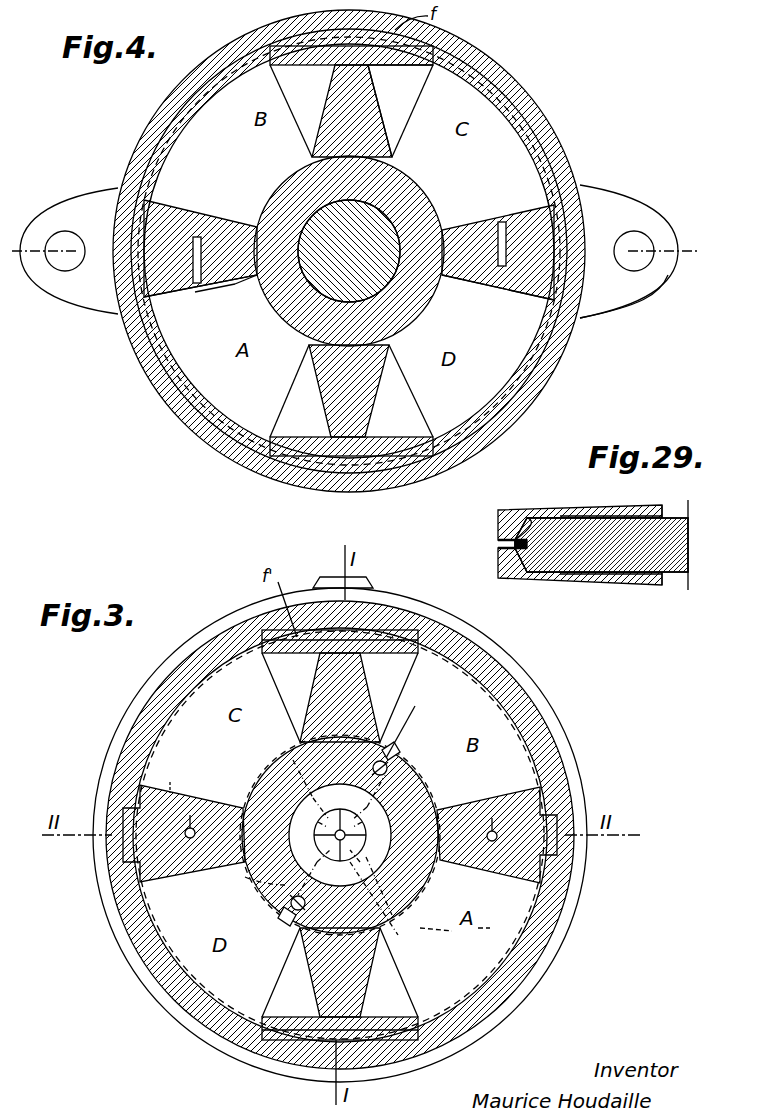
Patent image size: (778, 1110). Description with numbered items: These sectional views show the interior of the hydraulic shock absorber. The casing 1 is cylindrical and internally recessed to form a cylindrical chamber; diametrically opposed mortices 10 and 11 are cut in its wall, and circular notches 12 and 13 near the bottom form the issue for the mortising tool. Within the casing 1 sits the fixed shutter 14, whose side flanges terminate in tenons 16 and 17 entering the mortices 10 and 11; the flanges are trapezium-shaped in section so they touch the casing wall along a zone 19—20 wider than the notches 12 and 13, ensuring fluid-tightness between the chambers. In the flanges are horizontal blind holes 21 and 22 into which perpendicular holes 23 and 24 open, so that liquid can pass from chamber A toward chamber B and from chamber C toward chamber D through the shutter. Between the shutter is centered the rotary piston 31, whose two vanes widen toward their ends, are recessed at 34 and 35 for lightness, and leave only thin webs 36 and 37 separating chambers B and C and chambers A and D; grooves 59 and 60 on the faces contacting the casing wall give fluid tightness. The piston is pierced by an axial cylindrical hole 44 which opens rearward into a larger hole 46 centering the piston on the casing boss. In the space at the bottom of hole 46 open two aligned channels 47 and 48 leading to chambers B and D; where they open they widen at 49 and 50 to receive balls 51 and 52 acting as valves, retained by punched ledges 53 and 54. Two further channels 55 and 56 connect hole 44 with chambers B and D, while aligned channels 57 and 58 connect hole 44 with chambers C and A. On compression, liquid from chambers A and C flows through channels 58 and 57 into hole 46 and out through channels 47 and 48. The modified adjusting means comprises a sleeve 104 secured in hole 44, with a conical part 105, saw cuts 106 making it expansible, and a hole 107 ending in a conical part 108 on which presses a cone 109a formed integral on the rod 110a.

In FIG. 3, the casing 1 is at (406, 721).
In FIG. 4, the mortice 10 is at (135, 257).
In FIG. 3, the mortice 10 is at (340, 835).
In FIG. 4, the mortice 11 is at (580, 247).
In FIG. 4, the circular notch 12 is at (122, 200).
In FIG. 4, the circular notch 13 is at (580, 303).
In FIG. 4, the fixed shutter 14 is at (241, 290).
In FIG. 4, the tenon 16 is at (120, 302).
In FIG. 4, the tenon 17 is at (580, 322).
In FIG. 4, the contact zone boundary 19 is at (168, 197).
In FIG. 3, the contact zone boundary 19 is at (184, 833).
In FIG. 4, the contact zone boundary 20 is at (148, 299).
In FIG. 4, the horizontal blind hole 21 is at (209, 290).
In FIG. 3, the horizontal blind hole 21 is at (489, 882).
In FIG. 4, the horizontal blind hole 22 is at (501, 222).
In FIG. 3, the horizontal blind hole 22 is at (167, 772).
In FIG. 3, the perpendicular hole 23 is at (193, 807).
In FIG. 3, the perpendicular hole 24 is at (506, 800).
In FIG. 4, the rotary piston 31 is at (268, 196).
In FIG. 3, the rotary piston 31 is at (425, 880).
In FIG. 4, the recess 34 is at (318, 98).
In FIG. 4, the recess 35 is at (300, 382).
In FIG. 4, the thin web 36 is at (400, 111).
In FIG. 4, the thin web 37 is at (362, 436).
In FIG. 3, the axial cylindrical hole 44 is at (318, 843).
In FIG. 3, the hole 46 is at (369, 836).
In FIG. 3, the channel 47 is at (392, 781).
In FIG. 3, the channel 48 is at (245, 877).
In FIG. 3, the widened portion 49 is at (392, 764).
In FIG. 3, the widened portion 50 is at (287, 901).
In FIG. 3, the ball 51 is at (389, 768).
In FIG. 3, the ball 52 is at (296, 923).
In FIG. 3, the ledge 53 is at (388, 758).
In FIG. 3, the ledge 54 is at (292, 917).
In FIG. 3, the channel 55 is at (350, 816).
In FIG. 3, the channel 56 is at (338, 870).
In FIG. 3, the channel 57 is at (302, 770).
In FIG. 3, the channel 58 is at (432, 925).
In FIG. 4, the fluid-tightness groove 59 is at (330, 95).
In FIG. 3, the fluid-tightness groove 59 is at (384, 635).
In FIG. 4, the fluid-tightness groove 60 is at (400, 473).
In FIG. 3, the fluid-tightness groove 60 is at (297, 1038).
In FIG. 29, the sleeve 104 is at (617, 588).
In FIG. 29, the conical part 105 is at (505, 508).
In FIG. 29, the saw cut 106 is at (536, 515).
In FIG. 29, the hole 107 is at (640, 508).
In FIG. 29, the conical part 108 is at (516, 580).
In FIG. 29, the cone 109a is at (537, 582).
In FIG. 29, the rod 110a is at (645, 558).